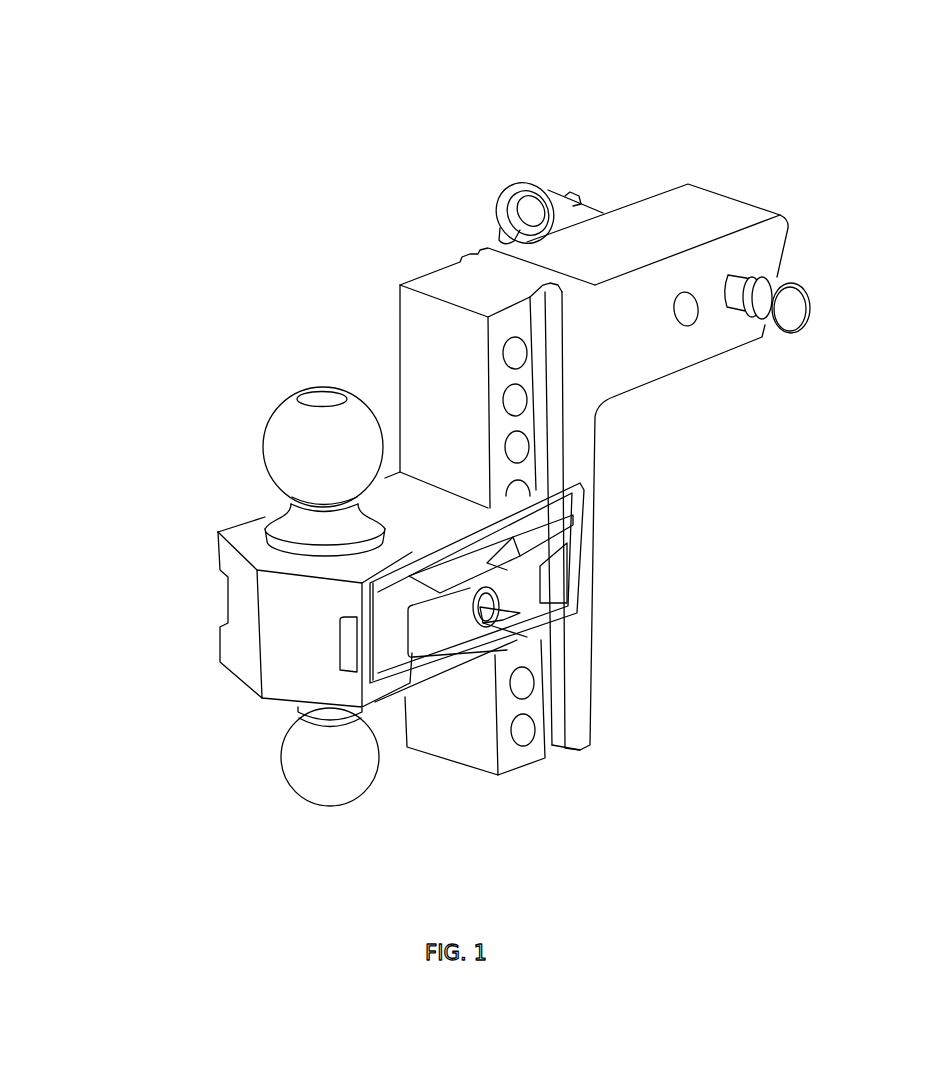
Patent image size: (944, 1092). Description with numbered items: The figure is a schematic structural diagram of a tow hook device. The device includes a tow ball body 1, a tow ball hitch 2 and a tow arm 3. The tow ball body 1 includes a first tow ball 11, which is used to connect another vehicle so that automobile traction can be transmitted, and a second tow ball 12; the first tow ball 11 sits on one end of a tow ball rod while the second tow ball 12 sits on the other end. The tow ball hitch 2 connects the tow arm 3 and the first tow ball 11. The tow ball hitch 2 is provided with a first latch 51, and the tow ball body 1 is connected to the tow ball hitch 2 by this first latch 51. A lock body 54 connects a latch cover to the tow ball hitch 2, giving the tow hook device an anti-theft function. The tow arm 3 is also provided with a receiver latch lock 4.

The tow ball body 1 is at (282, 507).
The first tow ball 11 is at (323, 446).
The second tow ball 12 is at (315, 783).
The tow ball hitch 2 is at (285, 630).
The tow arm 3 is at (618, 339).
The receiver latch lock 4 is at (533, 190).
The first latch 51 is at (540, 565).
The lock body 54 is at (500, 622).